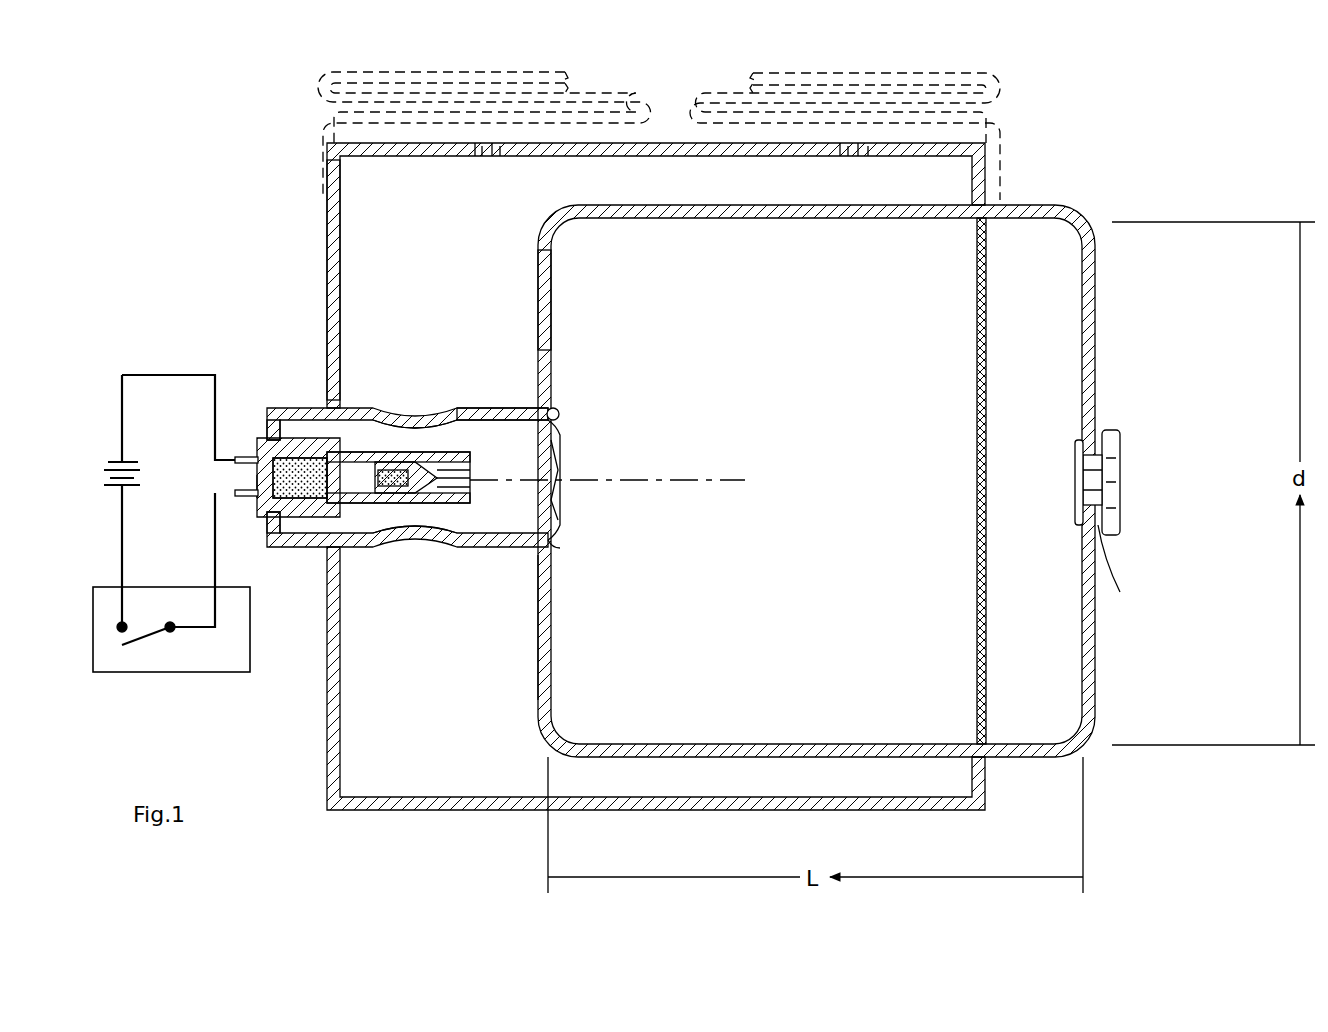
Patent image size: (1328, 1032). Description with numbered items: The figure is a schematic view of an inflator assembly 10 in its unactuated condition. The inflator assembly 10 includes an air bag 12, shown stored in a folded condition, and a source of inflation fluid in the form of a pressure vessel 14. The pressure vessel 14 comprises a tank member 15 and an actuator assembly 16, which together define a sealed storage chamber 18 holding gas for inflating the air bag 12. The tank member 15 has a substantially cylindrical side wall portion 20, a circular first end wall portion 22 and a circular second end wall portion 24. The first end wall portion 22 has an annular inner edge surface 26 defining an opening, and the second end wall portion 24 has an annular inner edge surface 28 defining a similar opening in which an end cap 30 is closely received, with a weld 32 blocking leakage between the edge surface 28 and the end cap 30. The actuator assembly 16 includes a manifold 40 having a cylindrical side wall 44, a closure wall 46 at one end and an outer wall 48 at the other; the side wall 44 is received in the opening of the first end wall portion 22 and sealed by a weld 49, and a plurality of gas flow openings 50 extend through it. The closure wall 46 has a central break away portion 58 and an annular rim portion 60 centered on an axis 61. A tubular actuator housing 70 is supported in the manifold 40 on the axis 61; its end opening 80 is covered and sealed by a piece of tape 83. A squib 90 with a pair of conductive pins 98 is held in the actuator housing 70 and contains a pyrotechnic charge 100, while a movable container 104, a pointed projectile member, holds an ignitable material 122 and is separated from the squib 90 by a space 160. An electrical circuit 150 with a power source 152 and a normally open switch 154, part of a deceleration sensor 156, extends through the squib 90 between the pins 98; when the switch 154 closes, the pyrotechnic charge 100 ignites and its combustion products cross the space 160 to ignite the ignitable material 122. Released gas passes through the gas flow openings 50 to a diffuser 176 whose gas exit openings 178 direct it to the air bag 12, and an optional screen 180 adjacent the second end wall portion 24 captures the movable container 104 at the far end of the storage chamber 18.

The inflator assembly 10 is at (205, 268).
The air bag 12 is at (320, 88).
The pressure vessel 14 is at (482, 290).
The tank member 15 is at (1110, 248).
The actuator assembly 16 is at (245, 375).
The storage chamber 18 is at (1045, 322).
The side wall portion 20 is at (808, 214).
The first end wall portion 22 is at (553, 272).
The second end wall portion 24 is at (1085, 272).
The annular inner edge surface 26 is at (556, 408).
The annular inner edge surface 28 is at (1078, 472).
The end cap 30 is at (1112, 420).
The weld 32 is at (1123, 573).
The manifold 40 is at (302, 408).
The side wall 44 is at (480, 410).
The closure wall 46 is at (560, 428).
The outer wall 48 is at (268, 412).
The weld 49 is at (540, 555).
The gas flow openings 50 is at (360, 470).
The break away portion 58 is at (558, 488).
The rim portion 60 is at (556, 536).
The axis 61 is at (697, 480).
The actuator housing 70 is at (330, 432).
The opening 80 is at (462, 470).
The tape 83 is at (466, 488).
The squib 90 is at (262, 506).
The pins 98 is at (240, 492).
The pyrotechnic charge 100 is at (310, 500).
The movable container 104 is at (420, 488).
The ignitable material 122 is at (393, 490).
The electrical circuit 150 is at (172, 372).
The power source 152 is at (108, 468).
The switch 154 is at (150, 637).
The deceleration sensor 156 is at (145, 672).
The space 160 is at (395, 432).
The diffuser 176 is at (326, 248).
The gas exit openings 178 is at (860, 152).
The screen 180 is at (976, 365).